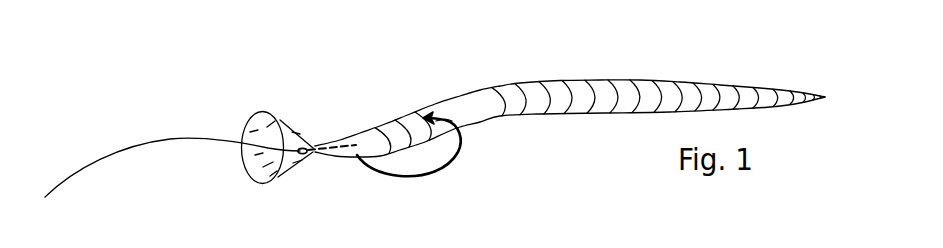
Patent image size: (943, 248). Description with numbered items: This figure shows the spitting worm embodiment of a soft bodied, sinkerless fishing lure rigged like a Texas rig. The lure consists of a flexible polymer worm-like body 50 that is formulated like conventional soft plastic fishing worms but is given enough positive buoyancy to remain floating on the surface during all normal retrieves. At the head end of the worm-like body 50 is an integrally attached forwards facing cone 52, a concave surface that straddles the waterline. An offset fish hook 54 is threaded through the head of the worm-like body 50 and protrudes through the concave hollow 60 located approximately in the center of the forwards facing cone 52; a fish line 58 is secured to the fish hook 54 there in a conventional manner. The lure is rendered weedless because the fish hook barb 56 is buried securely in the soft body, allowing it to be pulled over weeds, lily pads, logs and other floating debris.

The worm-like body 50 is at (550, 80).
The forwards facing cone 52 is at (262, 111).
The offset fish hook 54 is at (454, 166).
The fish hook barb 56 is at (423, 118).
The fish line 58 is at (133, 147).
The concave hollow 60 is at (246, 165).